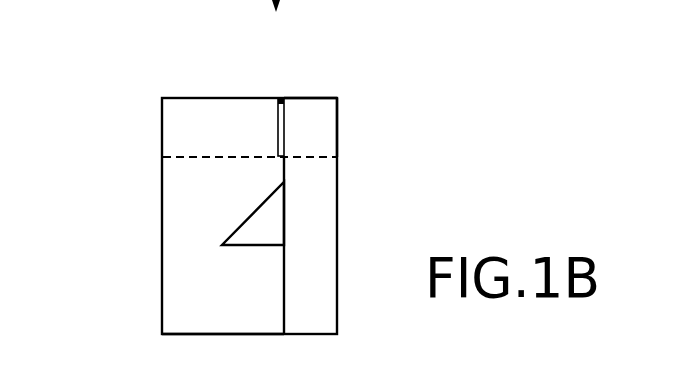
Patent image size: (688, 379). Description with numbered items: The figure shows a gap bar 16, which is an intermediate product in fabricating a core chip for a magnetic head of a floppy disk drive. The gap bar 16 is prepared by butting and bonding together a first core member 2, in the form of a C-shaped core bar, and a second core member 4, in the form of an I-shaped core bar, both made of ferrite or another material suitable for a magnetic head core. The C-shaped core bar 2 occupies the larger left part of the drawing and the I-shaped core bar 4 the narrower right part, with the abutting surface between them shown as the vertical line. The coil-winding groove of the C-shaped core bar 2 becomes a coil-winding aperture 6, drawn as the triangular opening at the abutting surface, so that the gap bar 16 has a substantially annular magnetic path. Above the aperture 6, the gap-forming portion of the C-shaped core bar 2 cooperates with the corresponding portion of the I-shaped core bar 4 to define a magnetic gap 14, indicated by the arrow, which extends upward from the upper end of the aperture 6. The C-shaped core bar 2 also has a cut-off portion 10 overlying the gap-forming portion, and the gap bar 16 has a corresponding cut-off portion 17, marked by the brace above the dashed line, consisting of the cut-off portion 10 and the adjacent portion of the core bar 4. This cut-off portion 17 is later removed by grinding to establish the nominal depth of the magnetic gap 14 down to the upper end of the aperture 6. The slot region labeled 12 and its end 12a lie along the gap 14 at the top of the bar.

The first core member 2 is at (178, 302).
The second core member 4 is at (320, 309).
The coil-winding aperture 6 is at (252, 211).
The cut-off portion 10 is at (285, 122).
The slot 12 is at (280, 97).
The slot end 12a is at (285, 141).
The magnetic gap 14 is at (287, 172).
The gap bar 16 is at (147, 191).
The cut-off portion 17 is at (147, 97).